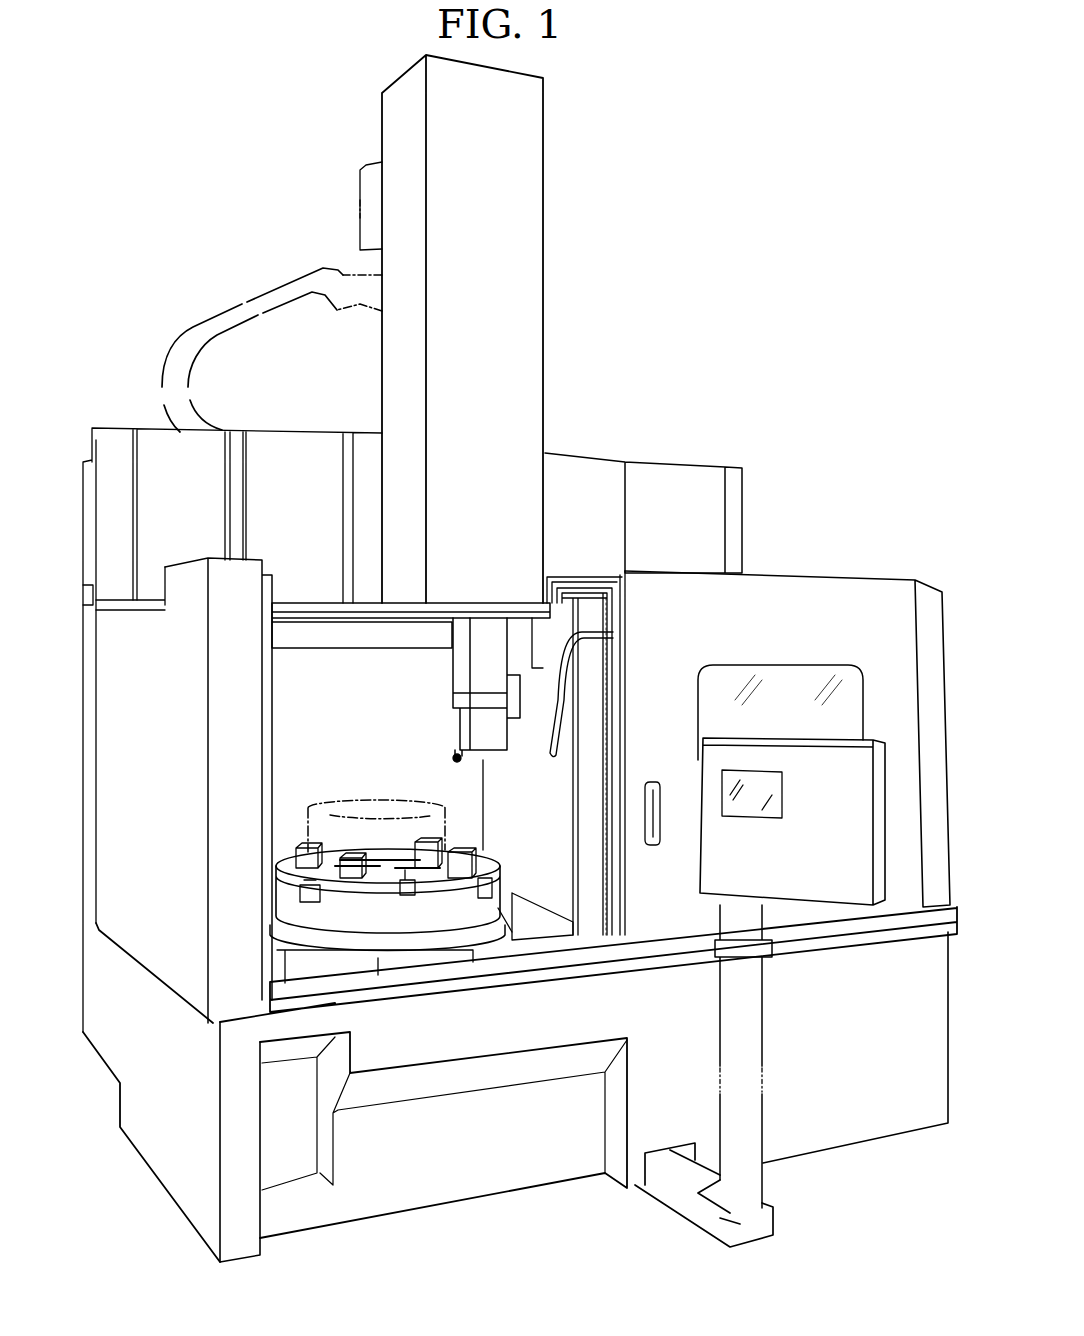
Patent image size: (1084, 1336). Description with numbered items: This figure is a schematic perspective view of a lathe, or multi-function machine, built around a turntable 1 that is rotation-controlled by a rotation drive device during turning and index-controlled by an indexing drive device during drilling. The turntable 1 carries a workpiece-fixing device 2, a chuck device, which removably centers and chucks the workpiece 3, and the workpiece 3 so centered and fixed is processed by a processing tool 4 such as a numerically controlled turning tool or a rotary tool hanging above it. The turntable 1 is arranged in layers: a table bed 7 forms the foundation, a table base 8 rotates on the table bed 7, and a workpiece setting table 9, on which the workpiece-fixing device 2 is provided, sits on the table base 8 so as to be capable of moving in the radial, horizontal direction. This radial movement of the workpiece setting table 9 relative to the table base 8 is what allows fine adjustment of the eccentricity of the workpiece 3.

The turntable 1 is at (516, 658).
The workpiece-fixing device 2 is at (330, 853).
The workpiece 3 is at (340, 807).
The processing tool 4 is at (440, 740).
The table bed 7 is at (320, 965).
The table base 8 is at (312, 937).
The workpiece setting table 9 is at (287, 892).